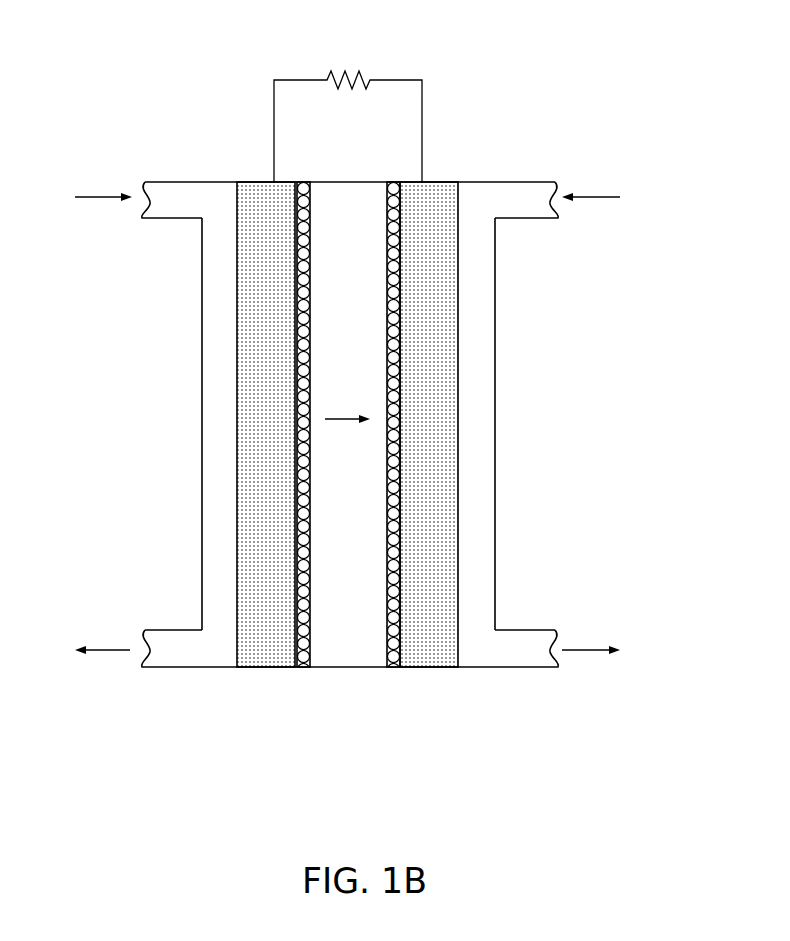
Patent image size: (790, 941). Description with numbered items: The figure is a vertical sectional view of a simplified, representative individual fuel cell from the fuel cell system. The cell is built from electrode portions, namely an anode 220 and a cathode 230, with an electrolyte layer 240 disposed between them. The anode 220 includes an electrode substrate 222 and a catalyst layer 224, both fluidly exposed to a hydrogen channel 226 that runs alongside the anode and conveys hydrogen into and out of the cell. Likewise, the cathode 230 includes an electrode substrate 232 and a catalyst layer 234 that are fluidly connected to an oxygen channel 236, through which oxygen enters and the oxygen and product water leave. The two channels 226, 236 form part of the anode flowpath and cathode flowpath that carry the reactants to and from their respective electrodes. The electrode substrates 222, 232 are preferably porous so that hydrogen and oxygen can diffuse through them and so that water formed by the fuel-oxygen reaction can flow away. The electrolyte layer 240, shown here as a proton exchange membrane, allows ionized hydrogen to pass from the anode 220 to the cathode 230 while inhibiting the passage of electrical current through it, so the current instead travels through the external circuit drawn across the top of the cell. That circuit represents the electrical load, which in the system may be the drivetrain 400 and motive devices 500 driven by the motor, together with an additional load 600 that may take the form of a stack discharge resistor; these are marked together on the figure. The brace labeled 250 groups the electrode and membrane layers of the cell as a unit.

The anode 220 is at (184, 110).
The electrode substrate 222 is at (247, 188).
The catalyst layer 224 is at (302, 188).
The hydrogen channel 226 is at (201, 299).
The cathode 230 is at (462, 677).
The electrode substrate 232 is at (448, 188).
The catalyst layer 234 is at (393, 188).
The oxygen channel 236 is at (496, 295).
The electrolyte layer 240 is at (306, 677).
The membrane electrode assembly 250 is at (462, 742).
The drivetrain 400 is at (357, 99).
The motive devices 500 is at (348, 126).
The additional load 600 is at (352, 70).